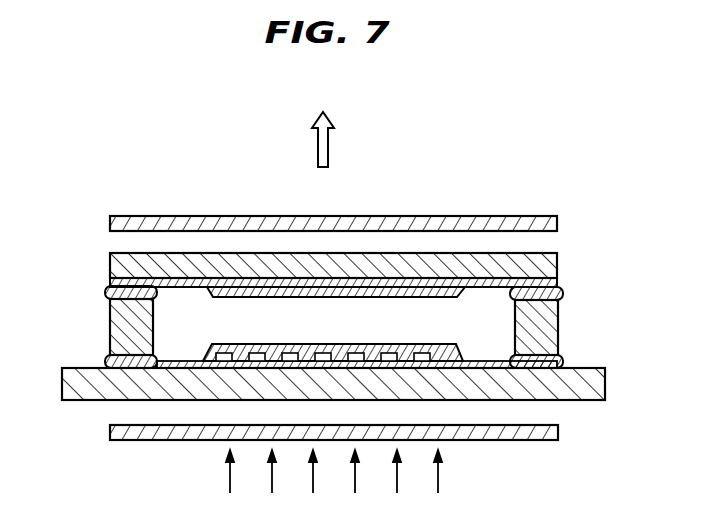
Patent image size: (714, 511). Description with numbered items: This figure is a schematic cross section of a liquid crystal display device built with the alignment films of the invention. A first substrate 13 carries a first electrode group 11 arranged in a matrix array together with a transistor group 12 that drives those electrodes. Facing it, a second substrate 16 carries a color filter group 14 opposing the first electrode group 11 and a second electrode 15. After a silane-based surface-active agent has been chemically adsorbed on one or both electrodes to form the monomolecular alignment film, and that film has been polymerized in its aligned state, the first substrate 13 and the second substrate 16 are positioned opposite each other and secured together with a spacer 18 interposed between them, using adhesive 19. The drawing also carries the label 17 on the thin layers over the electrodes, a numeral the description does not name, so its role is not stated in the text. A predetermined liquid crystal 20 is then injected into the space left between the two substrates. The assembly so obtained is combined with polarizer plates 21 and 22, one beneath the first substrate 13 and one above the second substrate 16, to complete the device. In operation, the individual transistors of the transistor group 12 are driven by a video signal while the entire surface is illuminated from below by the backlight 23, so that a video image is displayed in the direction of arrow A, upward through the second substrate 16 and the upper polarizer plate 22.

The first electrode group 11 is at (440, 357).
The transistor group 12 is at (487, 368).
The first substrate 13 is at (605, 385).
The color filter group 14 is at (230, 292).
The second electrode 15 is at (110, 279).
The second substrate 16 is at (110, 260).
The adhesive layer 17 is at (366, 291).
The spacer 18 is at (110, 330).
The adhesive 19 is at (107, 292).
The liquid crystal 20 is at (479, 298).
The polarizer plate 21 is at (110, 427).
The polarizer plate 22 is at (543, 217).
The backlight 23 is at (230, 478).
The arrow A is at (328, 118).